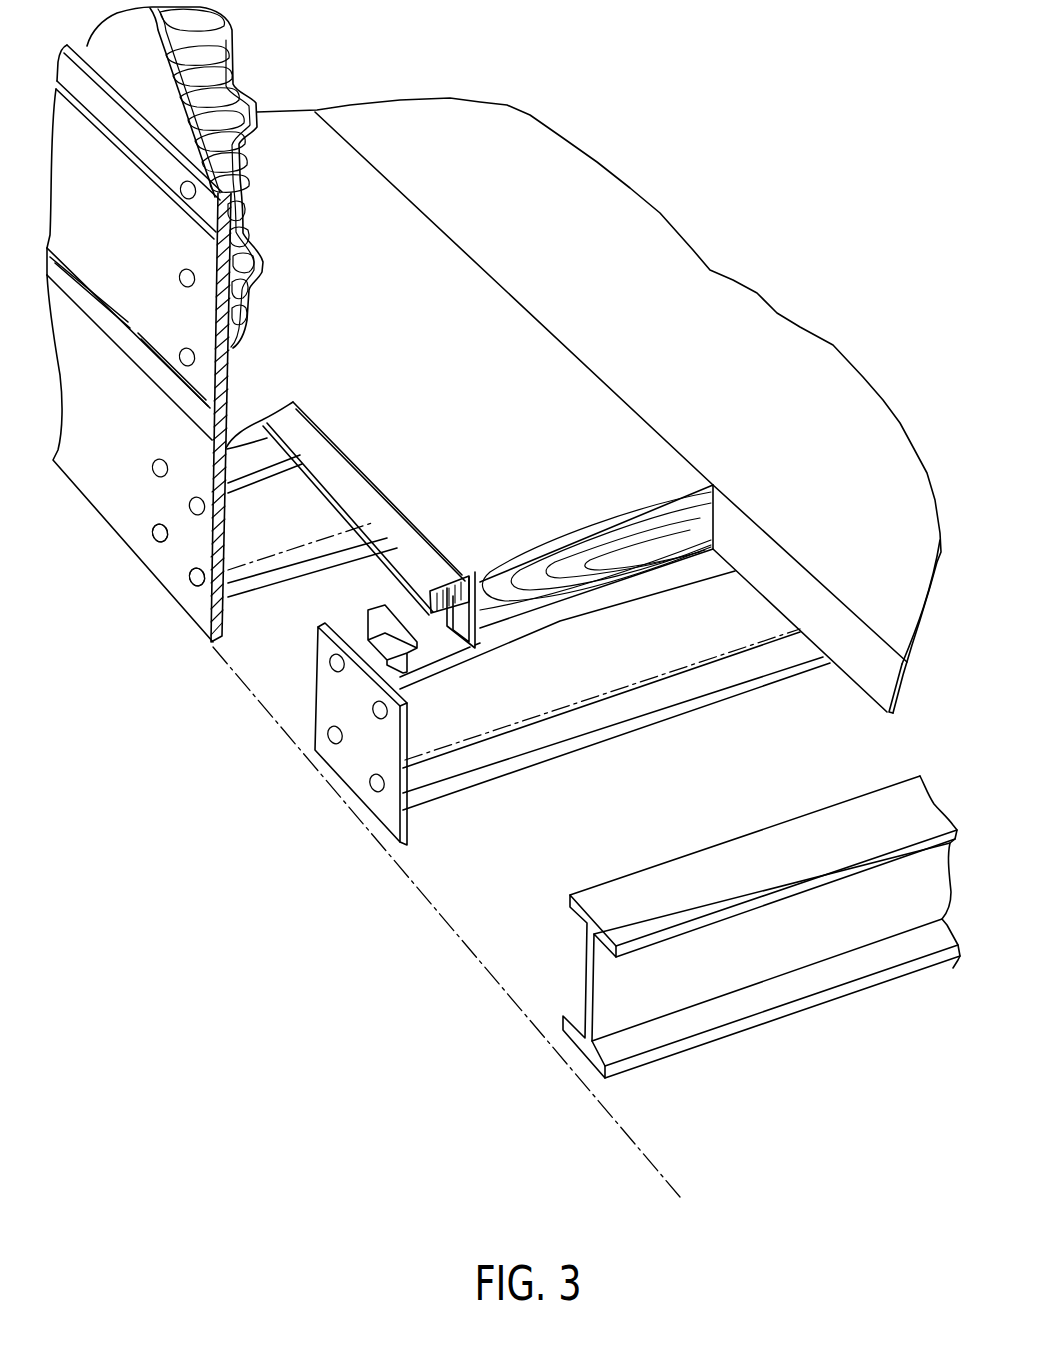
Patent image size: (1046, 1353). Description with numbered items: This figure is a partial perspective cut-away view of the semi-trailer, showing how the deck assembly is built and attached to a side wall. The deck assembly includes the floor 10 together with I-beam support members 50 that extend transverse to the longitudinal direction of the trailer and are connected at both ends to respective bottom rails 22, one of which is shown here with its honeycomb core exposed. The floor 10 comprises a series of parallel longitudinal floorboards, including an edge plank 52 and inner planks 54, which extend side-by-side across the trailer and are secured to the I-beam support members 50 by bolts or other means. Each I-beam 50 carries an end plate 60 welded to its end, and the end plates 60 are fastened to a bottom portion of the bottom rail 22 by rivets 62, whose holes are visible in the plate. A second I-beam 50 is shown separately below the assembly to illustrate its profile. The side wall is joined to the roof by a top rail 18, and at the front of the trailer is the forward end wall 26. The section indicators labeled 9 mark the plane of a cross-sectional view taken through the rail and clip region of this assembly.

The floor 10 is at (540, 162).
The top rail 18 is at (483, 617).
The bottom rail 22 is at (85, 473).
The forward end wall 26 is at (530, 608).
The I-beam support member 50 is at (453, 792).
The edge plank 52 is at (350, 305).
The inner plank 54 is at (637, 303).
The end plate 60 is at (353, 773).
The rivet 62 is at (163, 543).
The section line 9- 9 is at (313, 643).